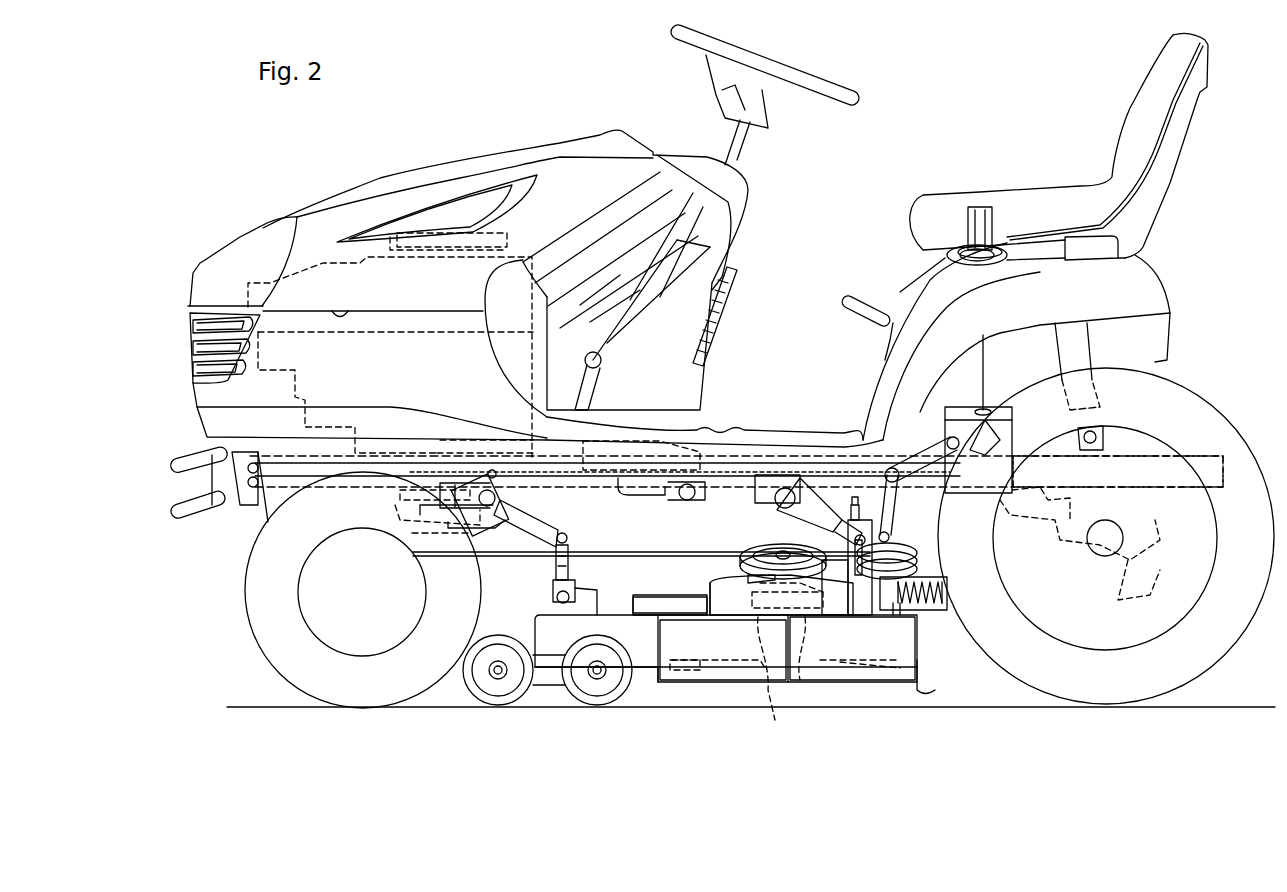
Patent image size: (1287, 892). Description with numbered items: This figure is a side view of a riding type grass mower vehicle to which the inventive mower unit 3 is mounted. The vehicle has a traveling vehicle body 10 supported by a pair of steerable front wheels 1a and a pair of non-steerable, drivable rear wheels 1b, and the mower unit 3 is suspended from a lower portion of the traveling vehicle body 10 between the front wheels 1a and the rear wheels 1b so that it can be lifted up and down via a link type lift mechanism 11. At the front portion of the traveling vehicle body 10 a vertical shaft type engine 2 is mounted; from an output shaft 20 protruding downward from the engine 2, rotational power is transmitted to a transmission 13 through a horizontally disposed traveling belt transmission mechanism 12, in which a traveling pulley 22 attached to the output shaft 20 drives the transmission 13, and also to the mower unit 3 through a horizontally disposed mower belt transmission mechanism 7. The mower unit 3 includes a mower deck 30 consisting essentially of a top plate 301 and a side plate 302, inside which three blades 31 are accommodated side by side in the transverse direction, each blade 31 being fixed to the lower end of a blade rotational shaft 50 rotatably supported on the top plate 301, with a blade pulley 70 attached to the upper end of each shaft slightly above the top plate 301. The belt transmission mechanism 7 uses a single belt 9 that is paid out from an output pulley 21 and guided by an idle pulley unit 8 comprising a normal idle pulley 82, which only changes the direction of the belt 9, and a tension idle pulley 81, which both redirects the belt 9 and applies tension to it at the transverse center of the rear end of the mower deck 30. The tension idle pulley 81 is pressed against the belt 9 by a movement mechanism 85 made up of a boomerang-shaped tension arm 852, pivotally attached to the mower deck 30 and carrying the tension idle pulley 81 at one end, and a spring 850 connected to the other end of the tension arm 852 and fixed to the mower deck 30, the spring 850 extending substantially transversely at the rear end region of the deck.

The engine 2 is at (323, 262).
The traveling pulley 22 is at (427, 473).
The traveling belt transmission mechanism 12 is at (623, 470).
The link type lift mechanism 11 is at (821, 503).
The traveling vehicle body 10 is at (1190, 455).
The transmission 13 is at (1147, 512).
The output shaft 20 is at (437, 494).
The output pulley 21 is at (412, 543).
The belt 9 is at (670, 550).
The normal idle pulley 82 is at (775, 545).
The tension idle pulley 81 is at (893, 553).
The idle pulley unit 8 is at (915, 552).
The spring 850 is at (933, 567).
The mower belt transmission mechanism 7 is at (520, 558).
The top plate 301 is at (617, 613).
The mower unit 3 is at (527, 628).
The front wheels 1a is at (258, 632).
The blade pulley 70 is at (753, 613).
The movement mechanism 85 is at (947, 612).
The tension arm 852 is at (920, 590).
The blade 31 is at (933, 670).
The mower deck 30 is at (760, 680).
The blade rotational shaft 50 is at (798, 677).
The side plate 302 is at (840, 653).
The rear wheels 1b is at (1210, 668).